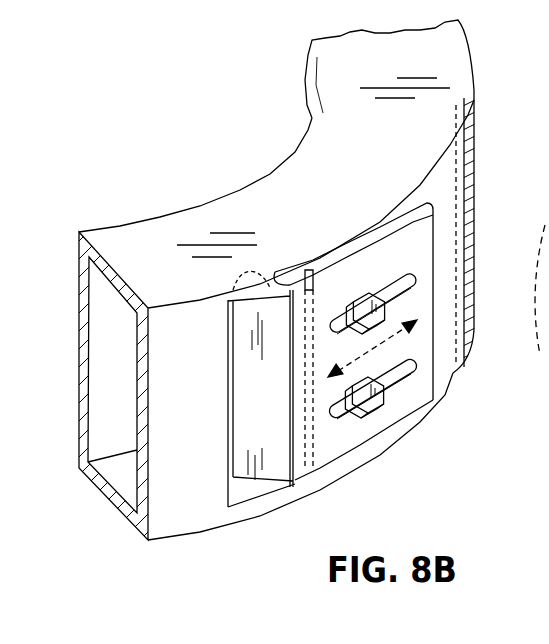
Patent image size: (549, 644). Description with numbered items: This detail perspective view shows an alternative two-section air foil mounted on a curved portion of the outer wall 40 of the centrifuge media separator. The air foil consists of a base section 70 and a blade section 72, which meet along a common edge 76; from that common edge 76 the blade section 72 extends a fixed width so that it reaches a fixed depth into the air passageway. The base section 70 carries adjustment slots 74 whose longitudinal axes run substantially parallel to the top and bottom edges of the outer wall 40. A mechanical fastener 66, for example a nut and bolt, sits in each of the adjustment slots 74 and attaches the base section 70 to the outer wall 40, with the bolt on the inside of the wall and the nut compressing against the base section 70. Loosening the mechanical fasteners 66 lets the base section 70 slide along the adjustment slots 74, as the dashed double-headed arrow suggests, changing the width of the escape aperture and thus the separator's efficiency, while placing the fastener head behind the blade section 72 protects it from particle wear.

The outer wall 40 is at (190, 512).
The mechanical fastener 66 is at (378, 408).
The base section 70 is at (407, 245).
The blade section 72 is at (273, 442).
The adjustment slots 74 is at (407, 287).
The common edge 76 is at (295, 458).